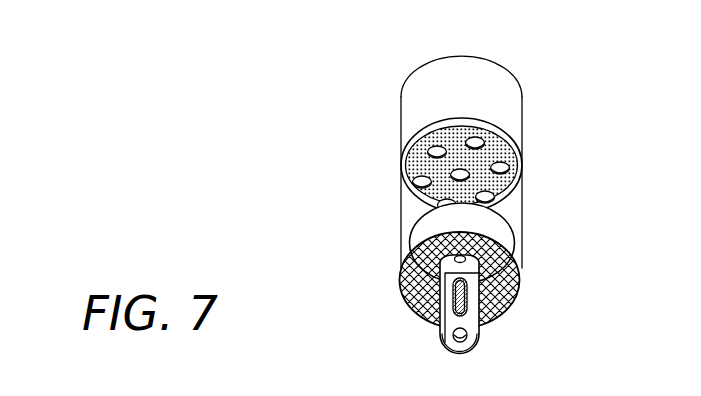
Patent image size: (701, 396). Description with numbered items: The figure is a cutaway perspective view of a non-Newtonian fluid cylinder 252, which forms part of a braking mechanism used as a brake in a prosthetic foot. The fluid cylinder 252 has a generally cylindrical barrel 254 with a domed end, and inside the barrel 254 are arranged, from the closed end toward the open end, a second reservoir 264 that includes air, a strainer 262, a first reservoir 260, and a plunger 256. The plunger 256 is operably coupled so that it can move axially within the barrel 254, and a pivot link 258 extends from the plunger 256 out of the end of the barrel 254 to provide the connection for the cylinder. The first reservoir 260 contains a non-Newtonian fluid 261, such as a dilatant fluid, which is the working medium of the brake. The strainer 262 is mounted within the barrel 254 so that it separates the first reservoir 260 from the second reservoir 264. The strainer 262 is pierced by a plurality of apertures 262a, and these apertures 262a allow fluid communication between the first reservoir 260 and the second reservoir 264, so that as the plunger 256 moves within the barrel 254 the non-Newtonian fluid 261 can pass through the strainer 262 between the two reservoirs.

The fluid cylinder 252 is at (494, 194).
The barrel 254 is at (520, 205).
The plunger 256 is at (403, 302).
The pivot link 258 is at (480, 313).
The first reservoir 260 is at (403, 218).
The non-Newtonian fluid 261 is at (398, 249).
The strainer 262 is at (401, 162).
The apertures 262a is at (404, 184).
The second reservoir 264 is at (409, 112).